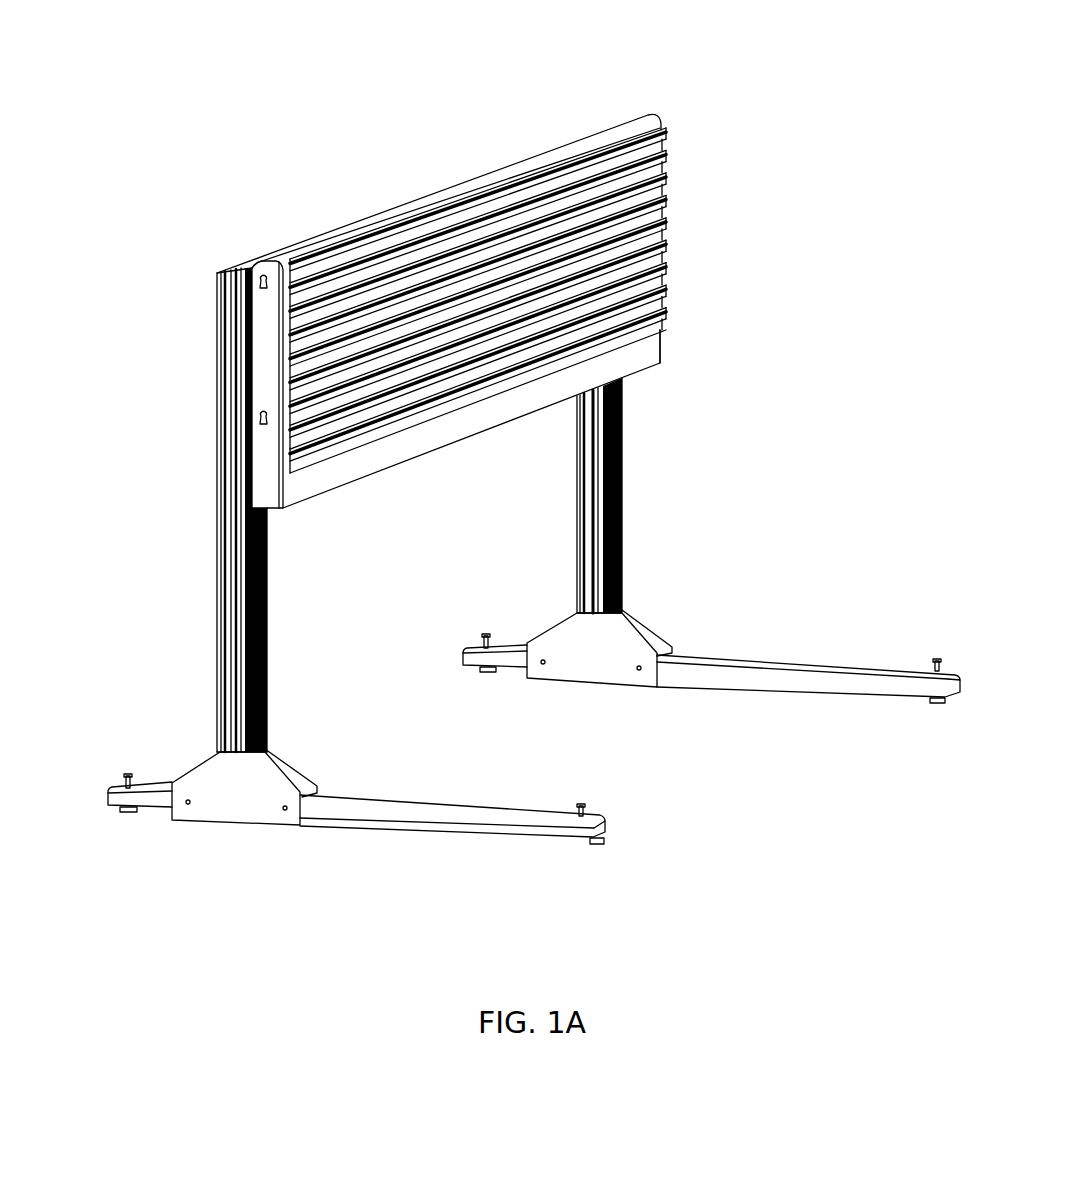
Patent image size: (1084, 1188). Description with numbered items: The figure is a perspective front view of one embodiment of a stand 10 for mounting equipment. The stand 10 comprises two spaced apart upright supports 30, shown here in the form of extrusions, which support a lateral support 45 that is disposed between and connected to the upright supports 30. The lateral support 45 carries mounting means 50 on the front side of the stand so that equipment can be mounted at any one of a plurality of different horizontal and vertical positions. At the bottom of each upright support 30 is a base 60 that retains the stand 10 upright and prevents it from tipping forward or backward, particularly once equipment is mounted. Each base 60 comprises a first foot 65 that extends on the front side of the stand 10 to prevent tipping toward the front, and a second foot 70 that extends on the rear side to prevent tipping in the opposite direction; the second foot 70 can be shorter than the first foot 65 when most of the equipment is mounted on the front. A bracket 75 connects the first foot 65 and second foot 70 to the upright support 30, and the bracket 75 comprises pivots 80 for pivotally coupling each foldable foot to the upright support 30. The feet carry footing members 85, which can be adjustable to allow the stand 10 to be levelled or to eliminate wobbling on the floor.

The stand 10 is at (421, 75).
The upright support 30 is at (222, 586).
The lateral support 45 is at (265, 372).
The mounting means 50 is at (666, 271).
The base 60 is at (320, 742).
The first foot 65 is at (458, 820).
The second foot 70 is at (110, 796).
The bracket 75 is at (227, 808).
The pivot 80 is at (187, 804).
The footing member 85 is at (594, 840).